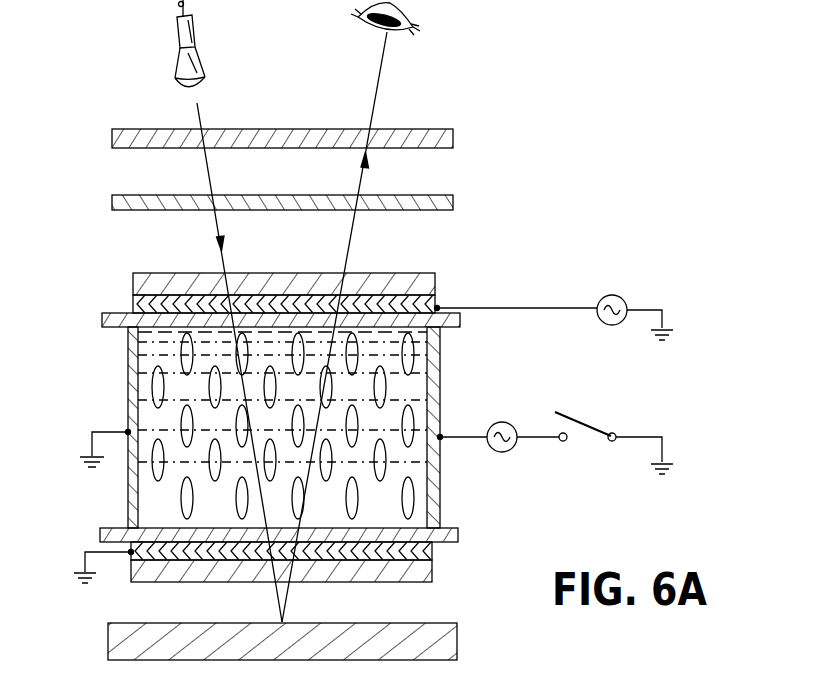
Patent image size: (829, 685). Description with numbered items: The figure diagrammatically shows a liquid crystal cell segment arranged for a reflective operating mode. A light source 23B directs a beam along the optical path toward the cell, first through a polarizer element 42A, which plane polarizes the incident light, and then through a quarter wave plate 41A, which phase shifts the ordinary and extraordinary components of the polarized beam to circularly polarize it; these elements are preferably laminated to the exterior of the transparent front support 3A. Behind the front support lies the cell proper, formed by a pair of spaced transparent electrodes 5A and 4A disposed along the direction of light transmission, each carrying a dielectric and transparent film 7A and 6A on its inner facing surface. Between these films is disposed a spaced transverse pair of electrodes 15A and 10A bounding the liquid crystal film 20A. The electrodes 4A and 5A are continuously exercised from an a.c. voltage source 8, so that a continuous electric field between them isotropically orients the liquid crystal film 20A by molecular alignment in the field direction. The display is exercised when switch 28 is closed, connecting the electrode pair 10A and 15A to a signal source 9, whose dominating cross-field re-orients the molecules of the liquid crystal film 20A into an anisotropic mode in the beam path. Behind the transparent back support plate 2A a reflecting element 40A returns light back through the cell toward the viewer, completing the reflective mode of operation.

The transparent back support plate 2A is at (433, 580).
The transparent front support 3A is at (133, 283).
The electrode 4A is at (433, 557).
The electrode 5A is at (133, 303).
The dielectric transparent film 6A is at (458, 538).
The dielectric transparent film 7A is at (101, 318).
The a.c. voltage source 8 is at (614, 296).
The signal source 9 is at (502, 422).
The electrode 10A is at (440, 362).
The electrode 15A is at (130, 382).
The liquid crystal film 20A is at (148, 490).
The light source 23B is at (177, 61).
The switch 28 is at (590, 425).
The reflecting element 40A is at (108, 636).
The quarter wave plate 41A is at (112, 204).
The polarizer element 42A is at (112, 136).